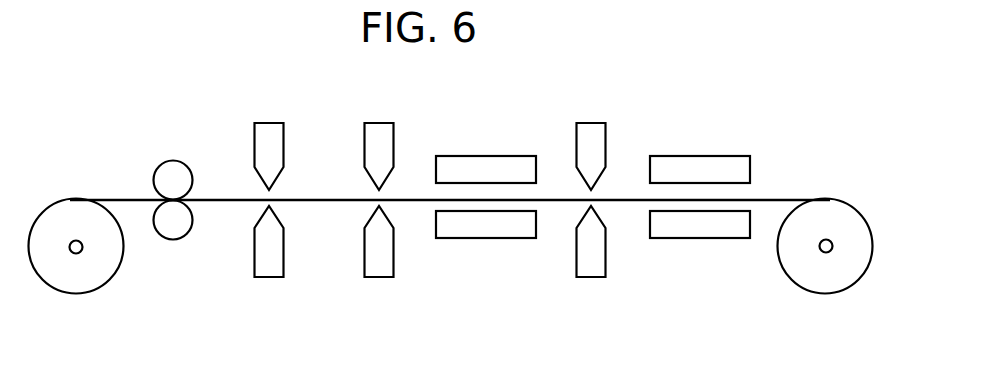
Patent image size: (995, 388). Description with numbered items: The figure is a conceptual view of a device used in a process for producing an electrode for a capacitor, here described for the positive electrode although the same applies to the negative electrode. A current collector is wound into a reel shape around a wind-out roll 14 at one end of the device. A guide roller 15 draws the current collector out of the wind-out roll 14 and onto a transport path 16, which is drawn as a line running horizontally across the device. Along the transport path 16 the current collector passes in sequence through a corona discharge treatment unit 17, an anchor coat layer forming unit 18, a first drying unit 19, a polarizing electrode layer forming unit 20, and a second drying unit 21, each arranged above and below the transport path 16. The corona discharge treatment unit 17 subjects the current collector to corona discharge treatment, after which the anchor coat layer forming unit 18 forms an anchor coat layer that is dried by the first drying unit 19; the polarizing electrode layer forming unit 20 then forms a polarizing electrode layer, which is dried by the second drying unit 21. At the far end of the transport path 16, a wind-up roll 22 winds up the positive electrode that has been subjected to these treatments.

The wind-out roll 14 is at (81, 280).
The guide roller 15 is at (171, 230).
The transport path 16 is at (208, 197).
The corona discharge treatment unit 17 is at (268, 263).
The anchor coat layer forming unit 18 is at (379, 262).
The first drying unit 19 is at (486, 232).
The polarizing electrode layer forming unit 20 is at (593, 260).
The second drying unit 21 is at (697, 230).
The wind-up roll 22 is at (820, 280).